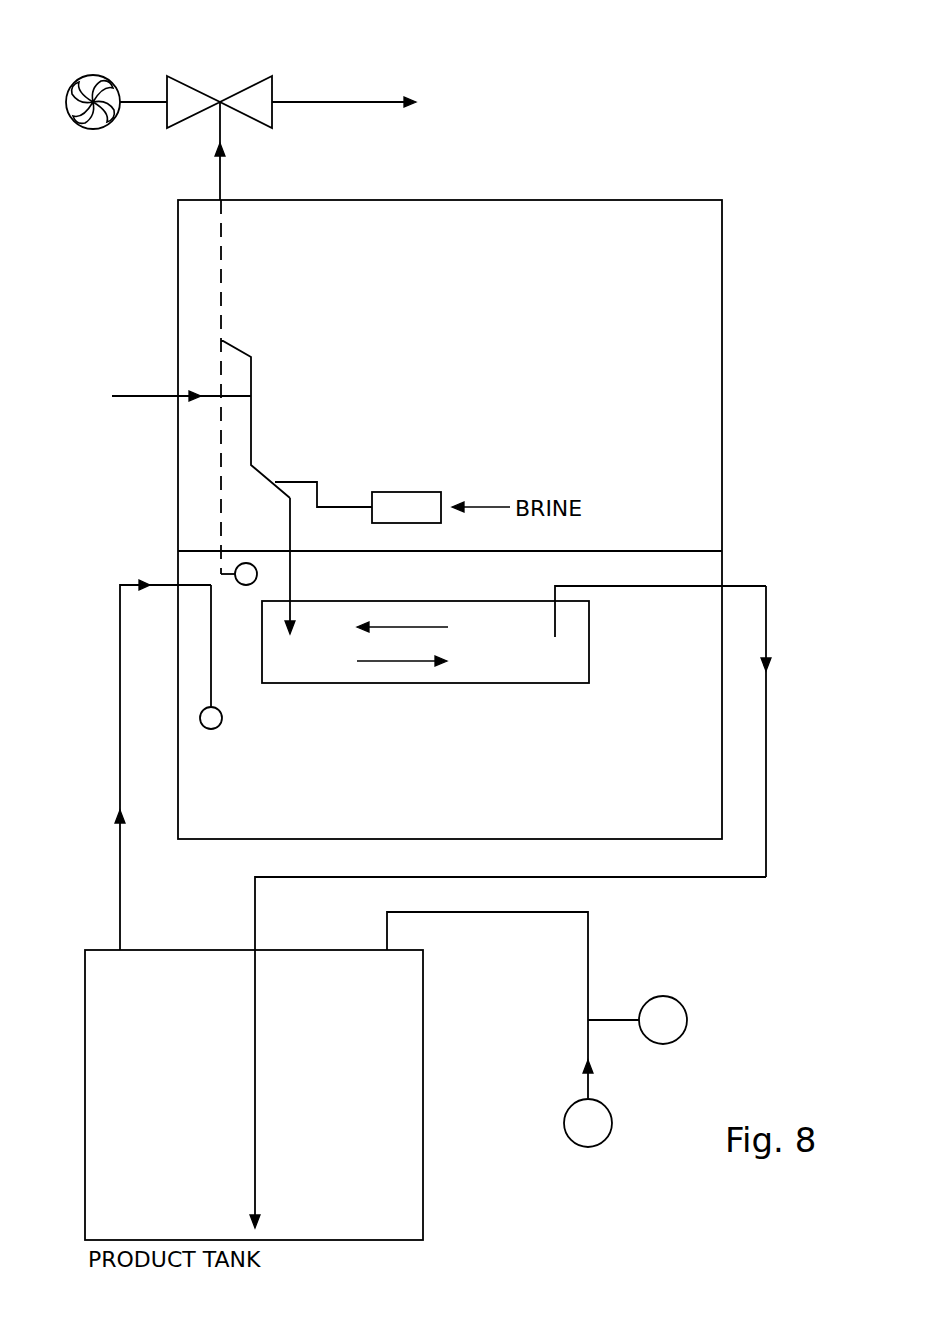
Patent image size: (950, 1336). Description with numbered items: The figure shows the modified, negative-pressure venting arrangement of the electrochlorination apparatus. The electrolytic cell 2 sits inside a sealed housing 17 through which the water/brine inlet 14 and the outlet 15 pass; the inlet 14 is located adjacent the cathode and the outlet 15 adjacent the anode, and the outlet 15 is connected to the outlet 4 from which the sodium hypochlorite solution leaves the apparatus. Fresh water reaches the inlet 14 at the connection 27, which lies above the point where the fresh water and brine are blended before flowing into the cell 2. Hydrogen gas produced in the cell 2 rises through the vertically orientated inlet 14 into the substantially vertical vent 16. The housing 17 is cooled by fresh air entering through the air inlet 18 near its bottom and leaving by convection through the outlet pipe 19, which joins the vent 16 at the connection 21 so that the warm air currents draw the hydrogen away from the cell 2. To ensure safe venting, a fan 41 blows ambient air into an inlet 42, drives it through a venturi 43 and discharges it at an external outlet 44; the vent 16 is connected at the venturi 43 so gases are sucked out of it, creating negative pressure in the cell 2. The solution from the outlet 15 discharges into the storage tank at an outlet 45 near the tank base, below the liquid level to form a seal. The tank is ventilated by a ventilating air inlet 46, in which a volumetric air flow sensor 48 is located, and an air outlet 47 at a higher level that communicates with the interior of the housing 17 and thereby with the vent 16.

The electrolytic cell 2 is at (483, 684).
The outlet 4 is at (766, 624).
The water/brine inlet 14 is at (292, 608).
The outlet 15 is at (563, 622).
The vent 16 is at (218, 268).
The sealed housing 17 is at (722, 727).
The air inlet 18 is at (211, 690).
The outlet pipe 19 is at (232, 573).
The connection 21 is at (219, 341).
The connection 27 is at (251, 396).
The fan 41 is at (93, 130).
The inlet 42 is at (143, 100).
The venturi 43 is at (262, 92).
The external outlet 44 is at (418, 102).
The outlet 45 is at (257, 1220).
The ventilating air inlet 46 is at (588, 1042).
The air outlet 47 is at (119, 883).
The volumetric air flow sensor 48 is at (683, 1003).